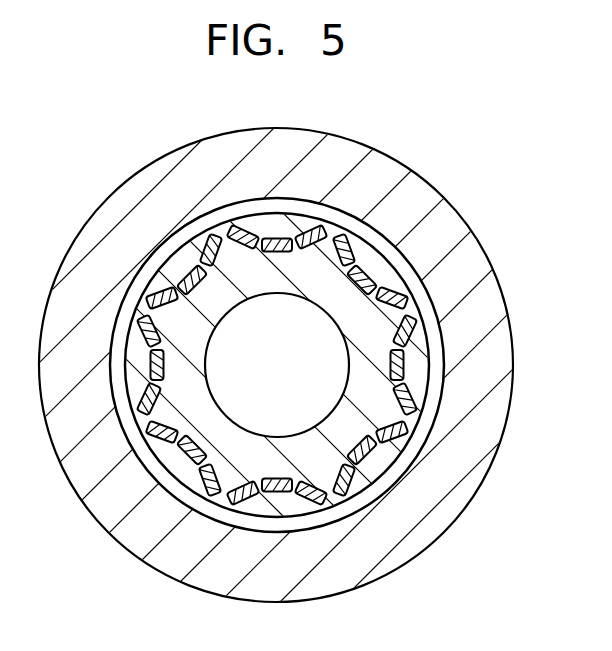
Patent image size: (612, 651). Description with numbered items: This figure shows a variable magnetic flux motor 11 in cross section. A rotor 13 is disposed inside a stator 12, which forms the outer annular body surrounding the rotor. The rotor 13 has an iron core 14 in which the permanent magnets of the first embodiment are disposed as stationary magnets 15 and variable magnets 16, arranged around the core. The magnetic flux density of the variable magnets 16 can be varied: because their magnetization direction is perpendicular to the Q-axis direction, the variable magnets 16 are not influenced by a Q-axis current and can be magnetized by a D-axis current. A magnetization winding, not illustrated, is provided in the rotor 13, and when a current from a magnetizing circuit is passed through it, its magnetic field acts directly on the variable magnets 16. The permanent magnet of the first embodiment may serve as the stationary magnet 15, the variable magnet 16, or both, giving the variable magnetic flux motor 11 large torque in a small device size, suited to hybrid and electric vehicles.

The variable magnetic flux motor 11 is at (453, 131).
The stator 12 is at (500, 444).
The rotor 13 is at (492, 181).
The iron core 14 is at (383, 283).
The stationary magnet 15 is at (415, 302).
The variable magnet 16 is at (442, 340).